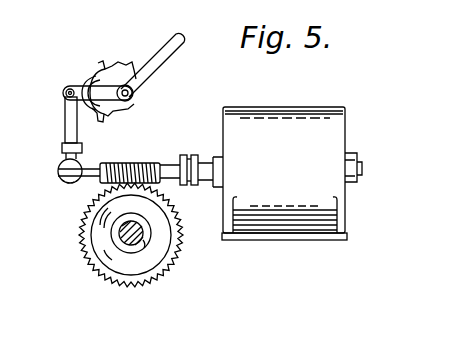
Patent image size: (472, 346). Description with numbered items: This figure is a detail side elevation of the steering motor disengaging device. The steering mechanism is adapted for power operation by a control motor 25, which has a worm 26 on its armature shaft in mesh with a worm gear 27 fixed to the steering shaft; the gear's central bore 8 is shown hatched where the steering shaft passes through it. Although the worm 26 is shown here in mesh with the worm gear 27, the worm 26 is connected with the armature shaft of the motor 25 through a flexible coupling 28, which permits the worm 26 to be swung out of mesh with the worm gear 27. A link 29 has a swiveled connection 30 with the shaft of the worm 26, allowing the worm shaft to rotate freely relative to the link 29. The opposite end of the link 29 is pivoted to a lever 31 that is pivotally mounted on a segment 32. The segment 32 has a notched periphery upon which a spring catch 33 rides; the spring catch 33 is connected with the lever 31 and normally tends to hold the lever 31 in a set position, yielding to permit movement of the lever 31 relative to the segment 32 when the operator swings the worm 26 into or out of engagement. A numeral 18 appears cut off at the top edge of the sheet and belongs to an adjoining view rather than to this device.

The shaft bore 8 is at (145, 235).
The element 18 (partial, adjacent figure) 18 is at (397, 0).
The control motor 25 is at (344, 110).
The worm 26 is at (145, 163).
The worm gear 27 is at (128, 287).
The flexible coupling 28 is at (193, 157).
The link 29 is at (65, 128).
The swiveled connection 30 is at (65, 184).
The lever 31 is at (138, 67).
The segment 32 is at (127, 62).
The spring catch 33 is at (87, 78).